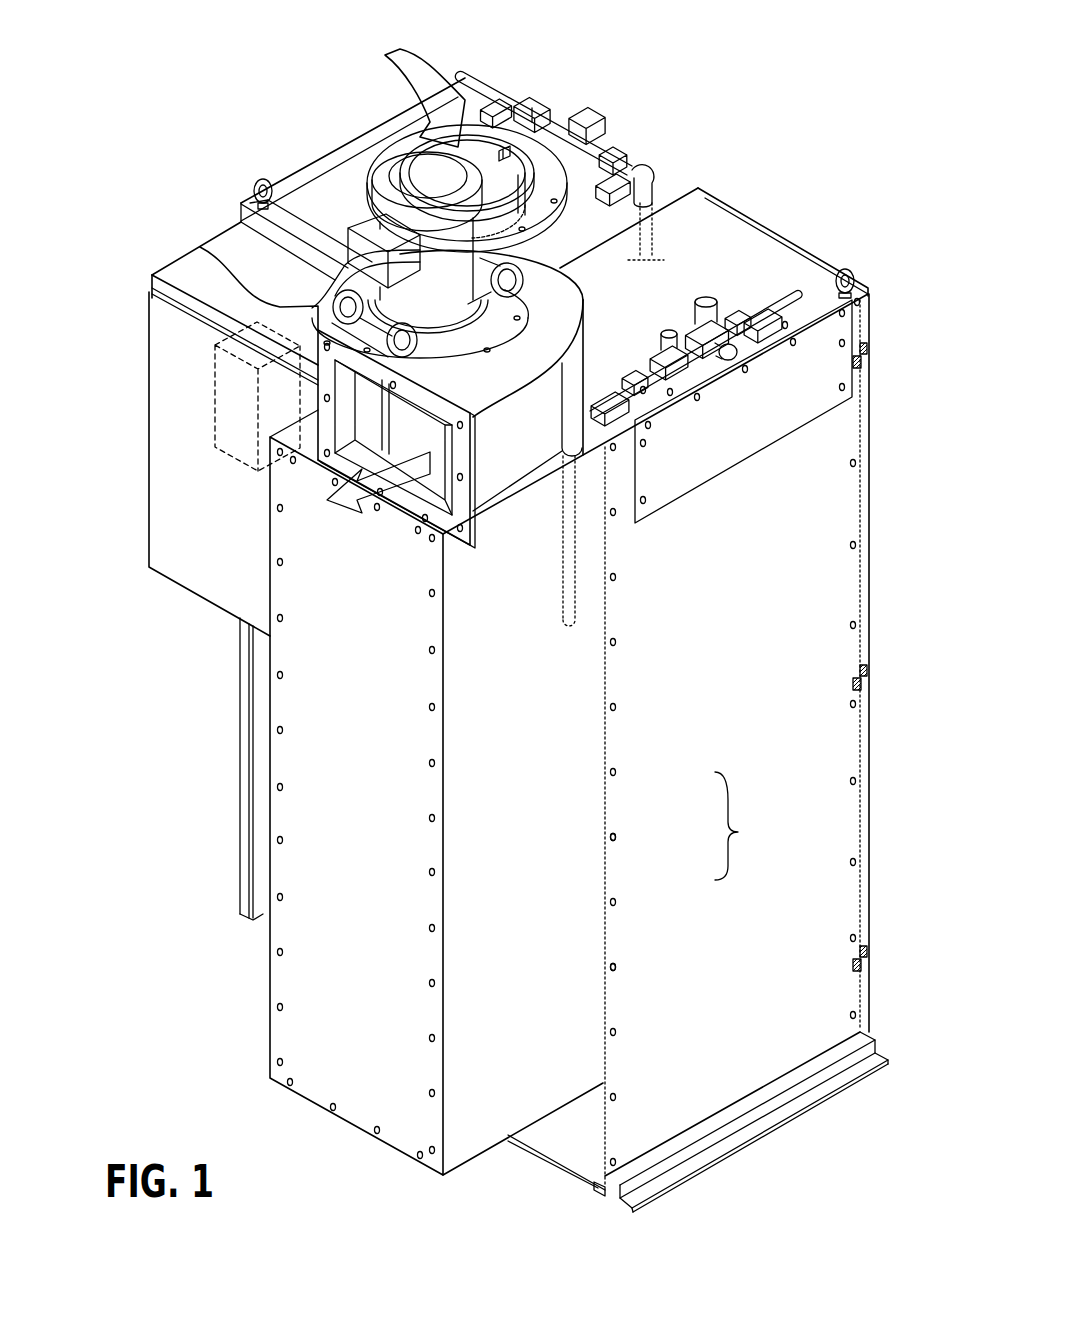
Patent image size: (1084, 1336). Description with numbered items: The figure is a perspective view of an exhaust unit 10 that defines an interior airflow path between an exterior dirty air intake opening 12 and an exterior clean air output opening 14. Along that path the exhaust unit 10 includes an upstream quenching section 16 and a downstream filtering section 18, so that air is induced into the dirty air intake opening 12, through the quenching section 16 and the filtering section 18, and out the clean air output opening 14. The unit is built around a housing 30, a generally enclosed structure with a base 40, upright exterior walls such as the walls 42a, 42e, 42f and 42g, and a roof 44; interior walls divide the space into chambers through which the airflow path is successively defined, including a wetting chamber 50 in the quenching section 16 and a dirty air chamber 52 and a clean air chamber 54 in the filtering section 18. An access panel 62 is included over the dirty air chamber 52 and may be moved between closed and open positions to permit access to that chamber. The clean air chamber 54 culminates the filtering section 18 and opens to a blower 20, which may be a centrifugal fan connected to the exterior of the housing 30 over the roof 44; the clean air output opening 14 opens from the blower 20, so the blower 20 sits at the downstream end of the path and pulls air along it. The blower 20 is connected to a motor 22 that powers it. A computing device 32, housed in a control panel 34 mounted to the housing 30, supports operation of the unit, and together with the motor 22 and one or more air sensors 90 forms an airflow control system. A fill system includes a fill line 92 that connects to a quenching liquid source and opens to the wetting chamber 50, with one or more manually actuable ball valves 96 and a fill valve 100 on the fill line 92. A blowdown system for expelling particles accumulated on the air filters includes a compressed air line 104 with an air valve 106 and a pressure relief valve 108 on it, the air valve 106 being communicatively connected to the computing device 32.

The exhaust unit 10 is at (180, 154).
The dirty air intake opening 12 is at (425, 128).
The clean air output opening 14 is at (436, 488).
The quenching section 16 is at (262, 750).
The filtering section 18 is at (675, 871).
The blower 20 is at (295, 305).
The motor 22 is at (375, 212).
The housing 30 is at (872, 576).
The computing device 32 is at (215, 417).
The control panel 34 is at (150, 347).
The base 40 is at (550, 1153).
The upright exterior wall 42a is at (258, 856).
The upright exterior wall 42e is at (820, 937).
The upright exterior wall 42f is at (530, 1097).
The upright exterior wall 42g is at (318, 1085).
The roof 44 is at (770, 265).
The wetting chamber 50 is at (251, 769).
The dirty air chamber 52 is at (630, 830).
The clean air chamber 54 is at (595, 930).
The access panel 62 is at (858, 842).
The air sensor 90 is at (553, 226).
The fill line 92 is at (662, 238).
The ball valve 96 is at (530, 103).
The fill valve 100 is at (597, 125).
The compressed air line 104 is at (590, 580).
The air valve 106 is at (690, 380).
The pressure relief valve 108 is at (755, 348).